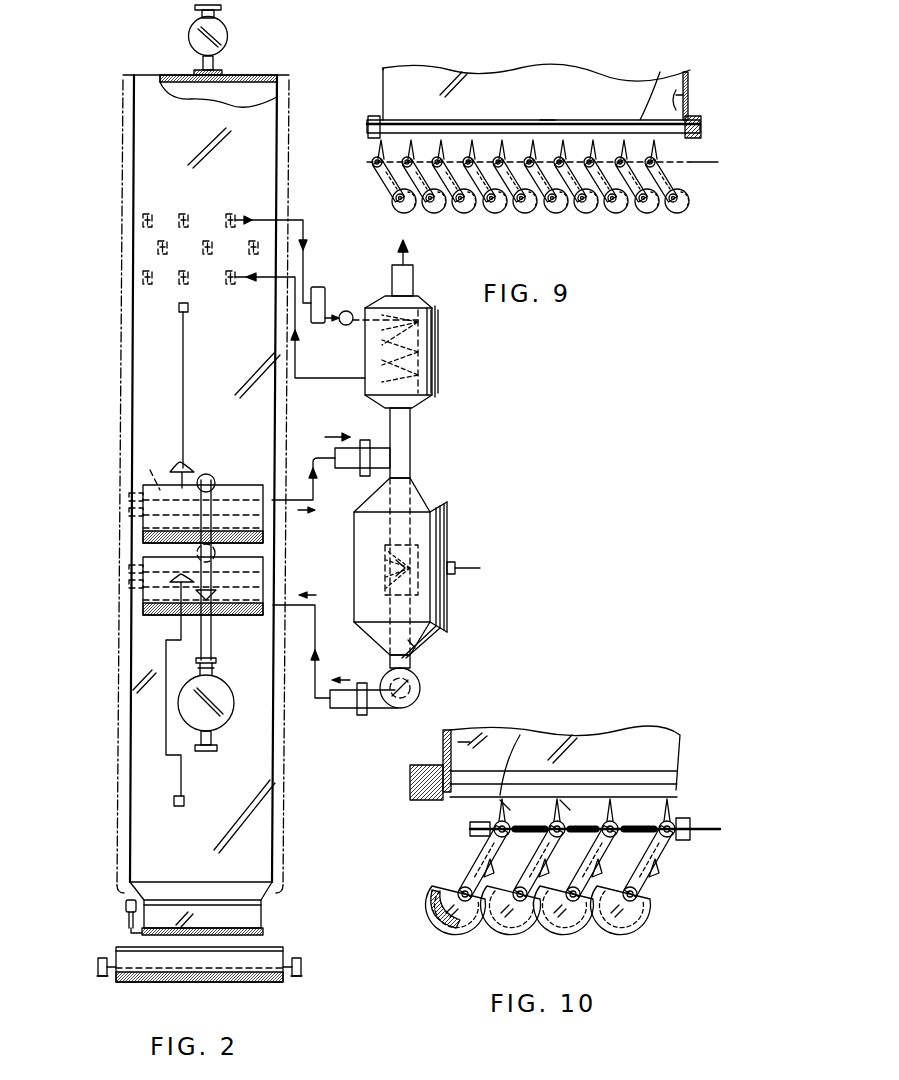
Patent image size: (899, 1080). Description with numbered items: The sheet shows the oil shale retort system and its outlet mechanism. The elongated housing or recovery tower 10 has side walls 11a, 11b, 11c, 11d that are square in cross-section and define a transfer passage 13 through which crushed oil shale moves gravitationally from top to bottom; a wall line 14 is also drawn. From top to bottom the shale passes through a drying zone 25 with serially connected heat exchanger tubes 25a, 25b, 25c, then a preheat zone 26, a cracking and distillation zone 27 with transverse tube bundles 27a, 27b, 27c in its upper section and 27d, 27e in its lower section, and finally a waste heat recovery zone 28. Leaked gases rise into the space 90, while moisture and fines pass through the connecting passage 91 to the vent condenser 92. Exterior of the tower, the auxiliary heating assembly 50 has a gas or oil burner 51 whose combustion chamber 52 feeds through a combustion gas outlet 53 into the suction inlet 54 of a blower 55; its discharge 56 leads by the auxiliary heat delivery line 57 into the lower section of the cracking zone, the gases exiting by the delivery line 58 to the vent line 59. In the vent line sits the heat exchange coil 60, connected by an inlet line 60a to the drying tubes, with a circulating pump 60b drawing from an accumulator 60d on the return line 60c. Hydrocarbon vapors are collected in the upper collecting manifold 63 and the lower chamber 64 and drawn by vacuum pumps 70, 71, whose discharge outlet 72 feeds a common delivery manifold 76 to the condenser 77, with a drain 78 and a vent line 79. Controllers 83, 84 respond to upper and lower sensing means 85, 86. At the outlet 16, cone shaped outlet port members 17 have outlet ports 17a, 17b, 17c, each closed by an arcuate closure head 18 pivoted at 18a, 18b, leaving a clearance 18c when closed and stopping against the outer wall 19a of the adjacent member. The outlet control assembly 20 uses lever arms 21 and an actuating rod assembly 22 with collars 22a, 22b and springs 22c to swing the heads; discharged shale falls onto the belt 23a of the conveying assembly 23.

In FIG. 2, the elongated housing 10 is at (134, 133).
In FIG. 9, the side wall 11a is at (381, 100).
In FIG. 10, the side wall 11a is at (440, 750).
In FIG. 2, the side wall 11b is at (287, 410).
In FIG. 9, the side wall 11b is at (662, 80).
In FIG. 10, the side wall 11b is at (498, 738).
In FIG. 2, the side wall 11c is at (147, 192).
In FIG. 9, the side wall 11c is at (690, 88).
In FIG. 2, the side wall 11d is at (133, 358).
In FIG. 9, the side wall 11d is at (428, 72).
In FIG. 10, the side wall 11d is at (560, 738).
In FIG. 9, the transfer passage 13 is at (674, 101).
In FIG. 10, the transfer passage 13 is at (478, 759).
In FIG. 2, the outer wall 14 is at (284, 135).
In FIG. 9, the outlet 16 is at (690, 102).
In FIG. 10, the outlet 16 is at (458, 740).
In FIG. 9, the outlet port member 17 is at (408, 150).
In FIG. 10, the outlet port member 17 is at (462, 834).
In FIG. 9, the outlet port 17a is at (400, 210).
In FIG. 10, the outlet port 17a is at (472, 918).
In FIG. 9, the outlet port 17b is at (446, 225).
In FIG. 10, the outlet port 17b is at (522, 930).
In FIG. 9, the outlet port 17c is at (488, 225).
In FIG. 10, the outlet port 17c is at (572, 935).
In FIG. 9, the closure head 18 is at (410, 210).
In FIG. 10, the closure head 18 is at (437, 908).
In FIG. 2, the pivotal connection 18a is at (133, 932).
In FIG. 10, the pivotal connection 18a is at (462, 890).
In FIG. 2, the pivotal connection 18b is at (263, 928).
In FIG. 10, the clearance 18c is at (445, 925).
In FIG. 10, the outer wall 19a is at (561, 878).
In FIG. 2, the outlet control assembly 20 is at (265, 900).
In FIG. 9, the outlet control assembly 20 is at (612, 224).
In FIG. 10, the outlet control assembly 20 is at (440, 858).
In FIG. 2, the lever arm 21 is at (127, 919).
In FIG. 9, the lever arm 21 is at (384, 175).
In FIG. 10, the lever arm 21 is at (480, 862).
In FIG. 2, the actuating rod assembly 22 is at (129, 898).
In FIG. 9, the actuating rod assembly 22 is at (696, 168).
In FIG. 10, the actuating rod assembly 22 is at (705, 838).
In FIG. 9, the collar 22a is at (377, 157).
In FIG. 10, the collar 22a is at (490, 800).
In FIG. 9, the collar 22b is at (654, 155).
In FIG. 10, the collar 22b is at (688, 818).
In FIG. 9, the spring 22c is at (545, 159).
In FIG. 10, the spring 22c is at (515, 784).
In FIG. 2, the conveying assembly 23 is at (276, 946).
In FIG. 2, the belt 23a is at (145, 970).
In FIG. 2, the drying zone 25 is at (142, 242).
In FIG. 2, the heat exchanger tube 25a is at (145, 220).
In FIG. 2, the heat exchanger tube 25b is at (158, 248).
In FIG. 2, the heat exchanger tube 25c is at (143, 277).
In FIG. 2, the preheat zone 26 is at (70, 292).
In FIG. 2, the cracking and distillation zone 27 is at (70, 486).
In FIG. 2, the tube bundle 27a is at (154, 467).
In FIG. 2, the tube bundle 27b is at (130, 507).
In FIG. 2, the tube bundle 27c is at (135, 565).
In FIG. 2, the tube bundle 27d is at (135, 585).
In FIG. 2, the tube bundle 27e is at (162, 612).
In FIG. 2, the waste heat recovery zone 28 is at (70, 622).
In FIG. 2, the auxiliary heating assembly 50 is at (452, 538).
In FIG. 2, the gas or oil burner 51 is at (404, 562).
In FIG. 2, the combustion chamber 52 is at (395, 580).
In FIG. 2, the combustion gas outlet 53 is at (420, 641).
In FIG. 2, the suction inlet 54 is at (420, 684).
In FIG. 2, the blower 55 is at (388, 706).
In FIG. 2, the discharge 56 is at (363, 716).
In FIG. 2, the auxiliary heat delivery line 57 is at (318, 616).
In FIG. 2, the delivery line 58 is at (320, 492).
In FIG. 2, the vent line 59 is at (412, 442).
In FIG. 2, the heat exchange coil 60 is at (420, 350).
In FIG. 2, the inlet line 60a is at (330, 380).
In FIG. 2, the circulating pump 60b is at (347, 311).
In FIG. 2, the return line 60c is at (303, 218).
In FIG. 2, the accumulator 60d is at (318, 287).
In FIG. 2, the upper hydrocarbon collecting manifold 63 is at (250, 485).
In FIG. 2, the lower chamber 64 is at (245, 616).
In FIG. 2, the vacuum pump 70 is at (216, 492).
In FIG. 2, the vacuum pump 71 is at (216, 558).
In FIG. 2, the discharge outlet 72 is at (206, 474).
In FIG. 2, the common delivery manifold 76 is at (214, 590).
In FIG. 2, the condenser 77 is at (226, 697).
In FIG. 2, the drain 78 is at (200, 745).
In FIG. 2, the vent line 79 is at (195, 655).
In FIG. 2, the controller 83 is at (183, 468).
In FIG. 2, the controller 84 is at (178, 581).
In FIG. 2, the upper sensing means 85 is at (190, 307).
In FIG. 2, the lower sensing means 86 is at (186, 803).
In FIG. 2, the space 90 is at (243, 102).
In FIG. 2, the connecting passage 91 is at (216, 65).
In FIG. 2, the vent condenser 92 is at (226, 30).